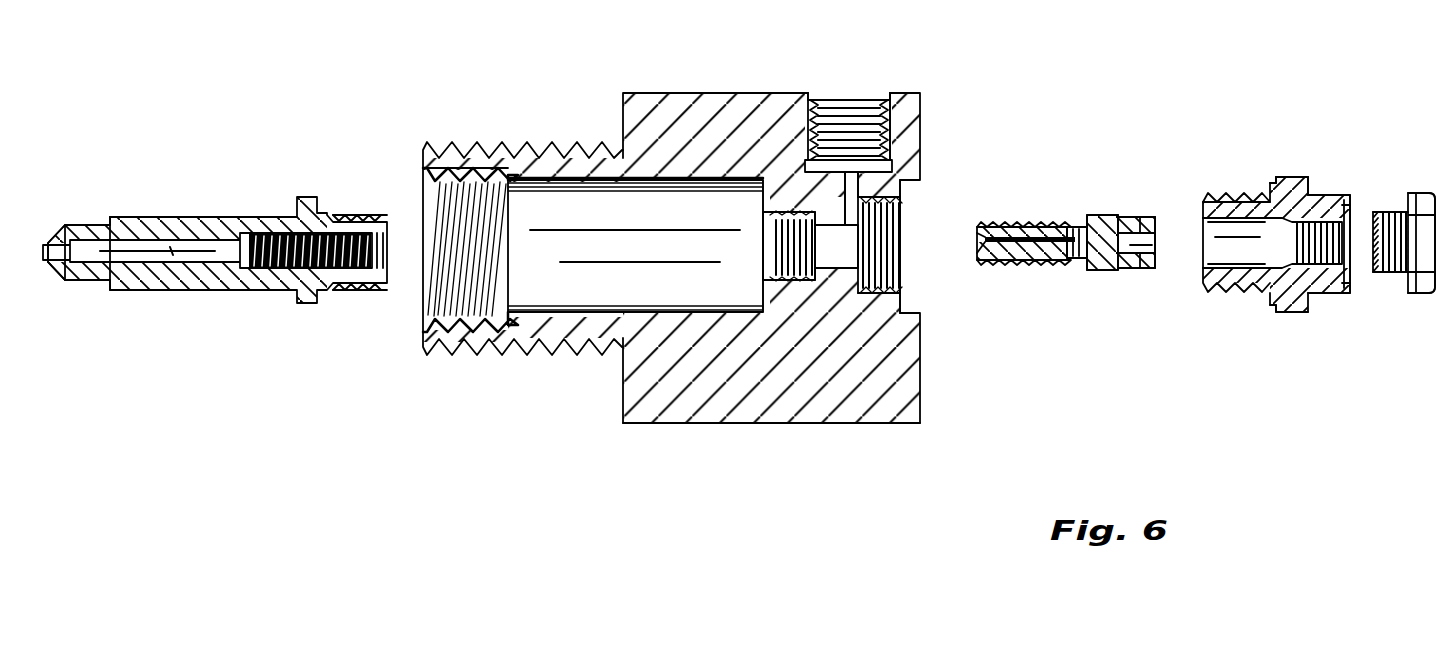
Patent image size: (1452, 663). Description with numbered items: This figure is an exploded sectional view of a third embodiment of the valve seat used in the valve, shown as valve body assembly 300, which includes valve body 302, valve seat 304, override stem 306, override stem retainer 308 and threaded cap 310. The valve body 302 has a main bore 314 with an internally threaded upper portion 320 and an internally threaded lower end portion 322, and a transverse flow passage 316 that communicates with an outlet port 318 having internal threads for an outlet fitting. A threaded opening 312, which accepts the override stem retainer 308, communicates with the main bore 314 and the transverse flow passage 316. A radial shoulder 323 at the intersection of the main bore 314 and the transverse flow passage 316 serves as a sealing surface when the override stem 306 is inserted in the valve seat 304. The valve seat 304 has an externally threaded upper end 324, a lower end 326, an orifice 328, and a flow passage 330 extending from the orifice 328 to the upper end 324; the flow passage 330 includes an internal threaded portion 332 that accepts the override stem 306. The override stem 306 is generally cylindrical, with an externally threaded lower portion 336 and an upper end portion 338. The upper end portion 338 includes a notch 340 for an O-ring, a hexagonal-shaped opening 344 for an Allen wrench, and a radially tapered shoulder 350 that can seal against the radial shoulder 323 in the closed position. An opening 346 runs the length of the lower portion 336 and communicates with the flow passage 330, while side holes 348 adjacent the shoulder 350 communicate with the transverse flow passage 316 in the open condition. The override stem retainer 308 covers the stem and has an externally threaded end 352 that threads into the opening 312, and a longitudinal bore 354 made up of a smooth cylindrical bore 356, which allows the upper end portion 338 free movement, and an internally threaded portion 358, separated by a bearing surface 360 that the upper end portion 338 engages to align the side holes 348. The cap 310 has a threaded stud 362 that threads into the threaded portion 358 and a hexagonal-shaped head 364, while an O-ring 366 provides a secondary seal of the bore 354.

The valve body assembly 300 is at (640, 462).
The valve body 302 is at (735, 425).
The valve seat 304 is at (203, 288).
The override stem 306 is at (1063, 290).
The override stem retainer 308 is at (1290, 318).
The threaded cap 310 is at (1420, 300).
The threaded opening 312 is at (885, 273).
The main bore 314 is at (555, 275).
The transverse flow passage 316 is at (900, 181).
The outlet port 318 is at (826, 100).
The internally threaded upper portion 320 is at (770, 234).
The internally threaded lower end portion 322 is at (457, 162).
The radial shoulder 323 is at (848, 180).
The externally threaded upper end 324 is at (345, 290).
The lower end 326 is at (48, 264).
The orifice 328 is at (44, 250).
The flow passage 330 is at (150, 218).
The internal threaded portion 332 is at (346, 213).
The externally threaded lower portion 336 is at (1030, 222).
The upper end portion 338 is at (1145, 216).
The notch 340 is at (1122, 272).
The hexagonal-shaped opening 344 is at (1156, 262).
The opening 346 is at (1015, 268).
The side holes 348 is at (1076, 226).
The radially tapered shoulder 350 is at (1092, 216).
The externally threaded end 352 is at (1212, 240).
The longitudinal bore 354 is at (1265, 180).
The smooth cylindrical bore 356 is at (1240, 220).
The internally threaded portion 358 is at (1340, 195).
The bearing surface 360 is at (1275, 200).
The threaded stud 362 is at (1388, 283).
The hexagonal-shaped head 364 is at (1425, 200).
The O-ring 366 is at (1395, 200).